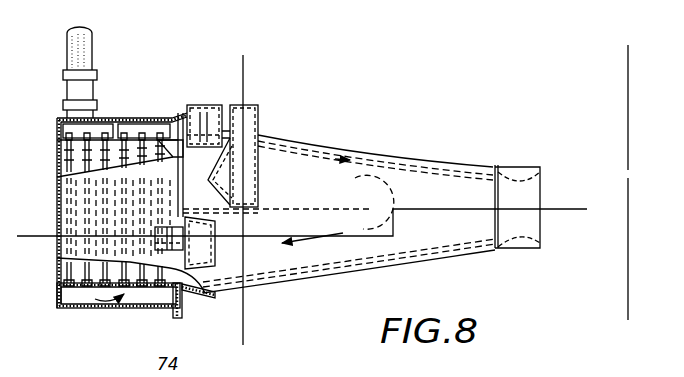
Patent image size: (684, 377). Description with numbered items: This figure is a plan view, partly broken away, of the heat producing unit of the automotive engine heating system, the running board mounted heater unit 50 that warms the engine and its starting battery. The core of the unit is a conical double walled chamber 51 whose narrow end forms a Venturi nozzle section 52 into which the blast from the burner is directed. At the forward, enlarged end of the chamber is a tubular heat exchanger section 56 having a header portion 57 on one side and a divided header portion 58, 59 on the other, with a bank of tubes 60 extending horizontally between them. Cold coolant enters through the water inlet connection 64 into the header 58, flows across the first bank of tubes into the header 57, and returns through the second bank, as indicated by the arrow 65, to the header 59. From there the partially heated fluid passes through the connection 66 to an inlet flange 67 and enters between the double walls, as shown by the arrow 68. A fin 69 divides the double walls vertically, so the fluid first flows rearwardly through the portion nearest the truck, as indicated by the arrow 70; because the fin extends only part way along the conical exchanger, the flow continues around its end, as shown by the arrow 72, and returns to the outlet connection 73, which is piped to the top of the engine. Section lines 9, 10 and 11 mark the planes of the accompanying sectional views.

The section line 9- 9 is at (28, 216).
The section line 10- 10 is at (606, 65).
The section line 11- 11 is at (218, 71).
The heater unit 50 is at (297, 132).
The conical double walled chamber 51 is at (365, 151).
The Venturi nozzle section 52 is at (506, 183).
The tubular heat exchanger section 56 is at (98, 310).
The header portion 57 is at (150, 297).
The header portion 58 is at (98, 127).
The header portion 59 is at (135, 128).
The bank of tubes 60 is at (105, 158).
The water inlet connection 64 is at (88, 41).
The arrow 65 is at (115, 303).
The connection 66 is at (194, 105).
The inlet flange 67 is at (249, 128).
The arrow 68 is at (249, 142).
The fin 69 is at (315, 208).
The arrow 70 is at (325, 150).
The arrow 72 is at (383, 188).
The outlet connection 73 is at (203, 252).